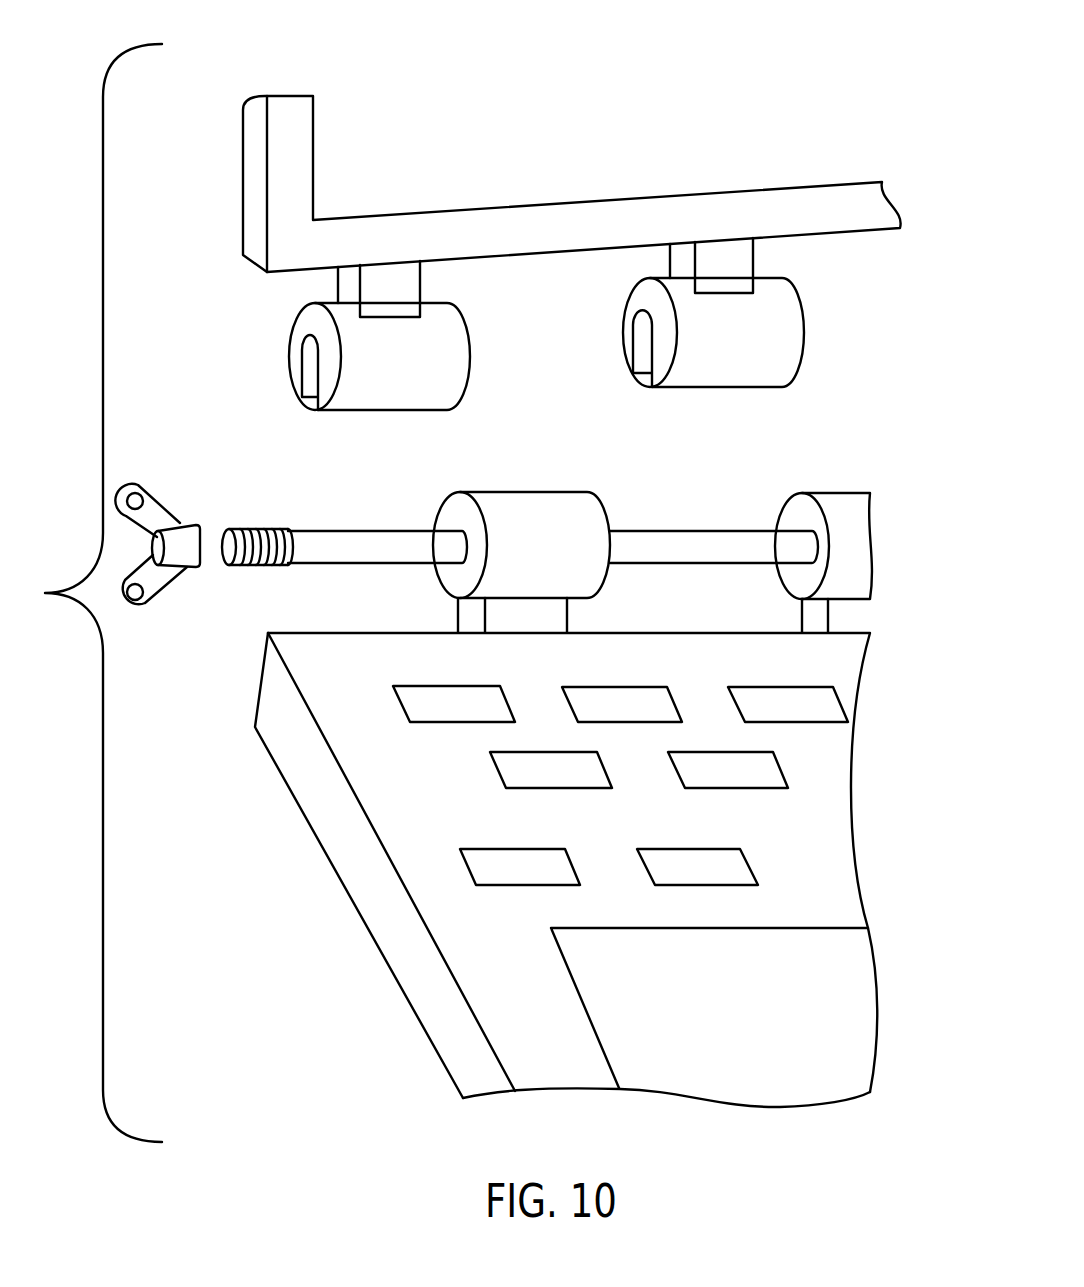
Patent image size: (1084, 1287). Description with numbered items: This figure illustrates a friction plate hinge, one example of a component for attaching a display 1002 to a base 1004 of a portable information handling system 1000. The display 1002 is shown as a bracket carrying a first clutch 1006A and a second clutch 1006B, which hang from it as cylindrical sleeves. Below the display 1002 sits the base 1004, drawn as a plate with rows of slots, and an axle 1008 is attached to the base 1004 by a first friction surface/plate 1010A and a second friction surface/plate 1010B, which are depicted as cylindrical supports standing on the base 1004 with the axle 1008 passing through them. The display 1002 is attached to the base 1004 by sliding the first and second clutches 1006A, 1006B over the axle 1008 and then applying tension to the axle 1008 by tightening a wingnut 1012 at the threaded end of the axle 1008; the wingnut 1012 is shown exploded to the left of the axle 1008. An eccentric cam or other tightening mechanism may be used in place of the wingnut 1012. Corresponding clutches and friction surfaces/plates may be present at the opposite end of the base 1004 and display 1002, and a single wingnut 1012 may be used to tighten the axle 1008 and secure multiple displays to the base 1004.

The portable information handling system 1000 is at (877, 100).
The display 1002 is at (238, 196).
The base 1004 is at (318, 838).
The first clutch 1006A is at (470, 347).
The second clutch 1006B is at (803, 347).
The axle 1008 is at (673, 531).
The first friction surface/plate 1010A is at (840, 493).
The second friction surface/plate 1010B is at (498, 492).
The wingnut 1012 is at (168, 510).